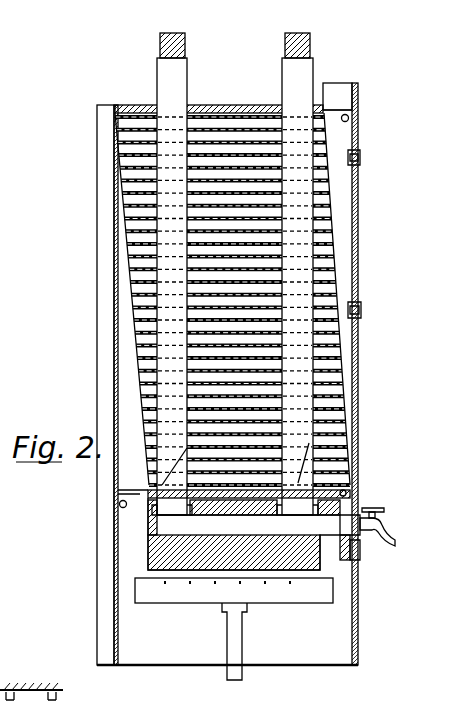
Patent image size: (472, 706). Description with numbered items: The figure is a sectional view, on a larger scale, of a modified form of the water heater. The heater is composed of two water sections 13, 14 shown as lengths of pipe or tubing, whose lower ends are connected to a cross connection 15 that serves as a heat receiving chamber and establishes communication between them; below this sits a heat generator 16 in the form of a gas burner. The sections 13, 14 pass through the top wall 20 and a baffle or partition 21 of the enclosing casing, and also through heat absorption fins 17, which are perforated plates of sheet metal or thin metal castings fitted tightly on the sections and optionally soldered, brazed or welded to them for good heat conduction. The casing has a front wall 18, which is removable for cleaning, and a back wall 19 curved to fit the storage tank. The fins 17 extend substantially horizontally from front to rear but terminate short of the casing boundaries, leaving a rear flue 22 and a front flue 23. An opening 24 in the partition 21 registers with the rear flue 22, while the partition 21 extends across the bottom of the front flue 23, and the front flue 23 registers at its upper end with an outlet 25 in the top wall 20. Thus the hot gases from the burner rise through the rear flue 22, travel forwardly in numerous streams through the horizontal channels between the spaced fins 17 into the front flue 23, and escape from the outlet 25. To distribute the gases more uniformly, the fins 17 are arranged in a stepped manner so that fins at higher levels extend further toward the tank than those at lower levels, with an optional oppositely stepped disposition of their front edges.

The water section 13 is at (300, 70).
The water section 14 is at (165, 73).
The cross connection 15 is at (150, 530).
The heat generator 16 is at (187, 590).
The heat absorption fins 17 is at (136, 385).
The front wall 18 is at (352, 205).
The back wall 19 is at (112, 153).
The top wall 20 is at (228, 106).
The partition 21 is at (338, 490).
The rear flue 22 is at (130, 312).
The front flue 23 is at (348, 283).
The opening 24 is at (128, 486).
The outlet 25 is at (340, 86).